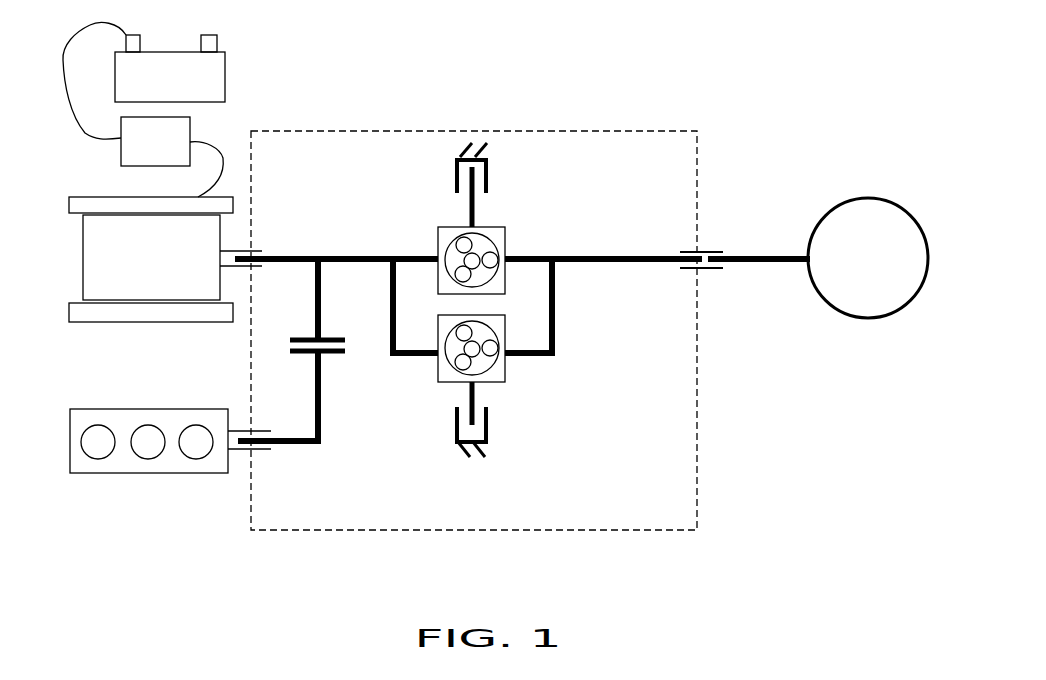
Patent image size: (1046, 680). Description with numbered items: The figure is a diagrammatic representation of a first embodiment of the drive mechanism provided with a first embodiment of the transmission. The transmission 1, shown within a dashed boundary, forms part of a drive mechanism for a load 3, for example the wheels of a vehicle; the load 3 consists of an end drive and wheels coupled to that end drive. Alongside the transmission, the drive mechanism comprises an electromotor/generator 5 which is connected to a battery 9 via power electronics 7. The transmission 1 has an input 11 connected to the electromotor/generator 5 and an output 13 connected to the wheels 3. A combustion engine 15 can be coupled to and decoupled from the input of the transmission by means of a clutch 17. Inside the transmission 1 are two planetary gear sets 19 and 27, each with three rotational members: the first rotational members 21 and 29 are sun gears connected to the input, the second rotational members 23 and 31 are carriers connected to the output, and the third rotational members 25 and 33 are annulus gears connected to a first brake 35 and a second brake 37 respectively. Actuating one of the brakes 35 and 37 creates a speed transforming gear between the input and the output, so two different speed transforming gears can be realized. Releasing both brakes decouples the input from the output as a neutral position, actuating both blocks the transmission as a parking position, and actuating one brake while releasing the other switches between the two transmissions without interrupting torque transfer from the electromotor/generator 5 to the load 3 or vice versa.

The transmission 1 is at (607, 128).
The load 3 is at (868, 198).
The electromotor/generator 5 is at (125, 323).
The power electronics 7 is at (172, 135).
The battery 9 is at (215, 66).
The input 11 is at (303, 256).
The output 13 is at (658, 250).
The combustion engine 15 is at (139, 475).
The clutch 17 is at (305, 352).
The planetary gear set 19 is at (505, 226).
The first rotational member 21 is at (435, 256).
The second rotational member 23 is at (515, 256).
The third rotational member 25 is at (468, 228).
The planetary gear set 27 is at (508, 385).
The first rotational member 29 is at (435, 357).
The second rotational member 31 is at (510, 357).
The third rotational member 33 is at (465, 385).
The first brake 35 is at (457, 173).
The second brake 37 is at (455, 437).